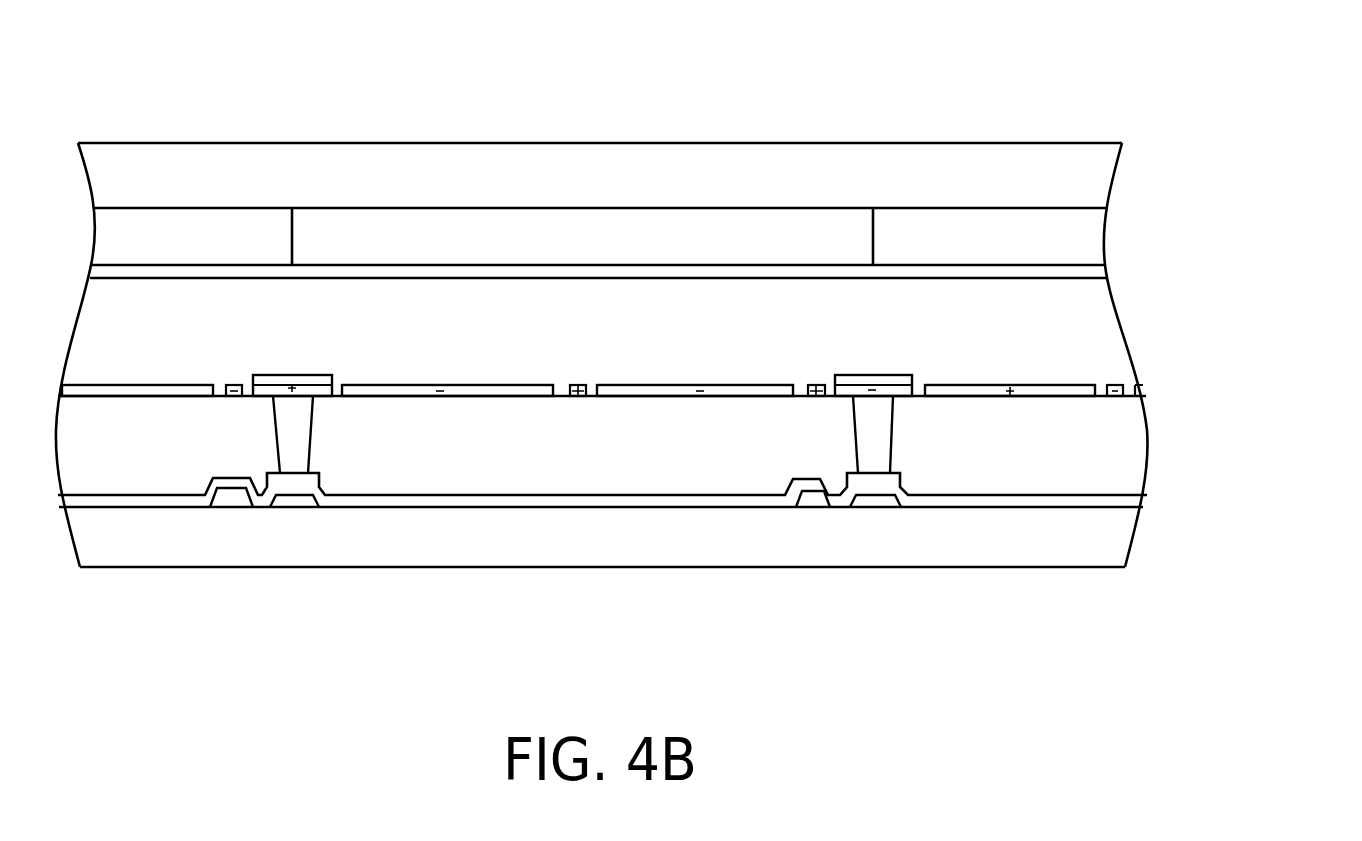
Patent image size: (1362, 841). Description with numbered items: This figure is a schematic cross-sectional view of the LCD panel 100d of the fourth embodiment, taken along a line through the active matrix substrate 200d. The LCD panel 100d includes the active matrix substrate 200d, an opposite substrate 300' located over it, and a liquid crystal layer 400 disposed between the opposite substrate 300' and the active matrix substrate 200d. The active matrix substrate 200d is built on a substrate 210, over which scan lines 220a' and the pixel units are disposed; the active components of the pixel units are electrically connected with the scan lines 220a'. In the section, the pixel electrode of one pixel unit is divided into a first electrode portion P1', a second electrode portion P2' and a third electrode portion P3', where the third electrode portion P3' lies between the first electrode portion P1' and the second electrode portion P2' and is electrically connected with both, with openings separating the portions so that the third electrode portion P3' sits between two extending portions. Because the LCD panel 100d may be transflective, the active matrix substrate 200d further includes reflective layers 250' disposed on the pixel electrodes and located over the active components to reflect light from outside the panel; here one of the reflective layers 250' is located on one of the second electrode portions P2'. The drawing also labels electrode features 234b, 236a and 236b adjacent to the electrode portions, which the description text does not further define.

The LCD panel 100d is at (1242, 723).
The opposite substrate 300' is at (705, 204).
The liquid crystal layer 400 is at (1085, 341).
The active matrix substrate 200d is at (1175, 448).
The substrate 210 is at (1090, 537).
The scan lines 220a' is at (521, 567).
The reflective layers 250' is at (582, 270).
The first electrode portion P1' is at (447, 232).
The second electrode portion P2' is at (942, 232).
The third electrode portion P3' is at (676, 232).
The pixel electrode 234b is at (972, 395).
The first auxiliary electrode 236a is at (576, 385).
The second auxiliary electrode 236b is at (233, 383).